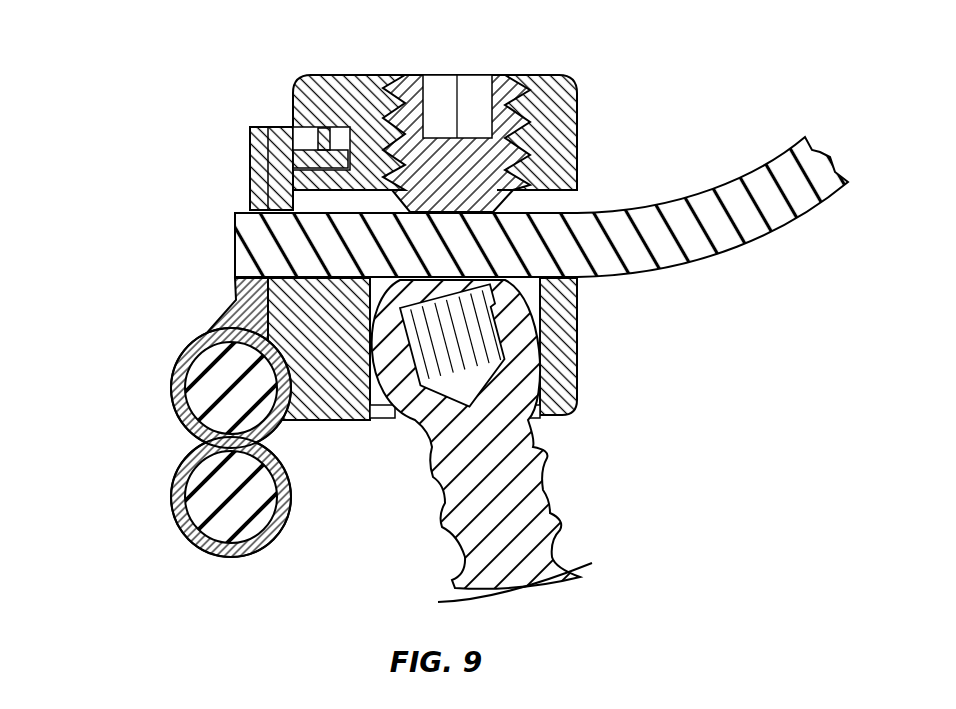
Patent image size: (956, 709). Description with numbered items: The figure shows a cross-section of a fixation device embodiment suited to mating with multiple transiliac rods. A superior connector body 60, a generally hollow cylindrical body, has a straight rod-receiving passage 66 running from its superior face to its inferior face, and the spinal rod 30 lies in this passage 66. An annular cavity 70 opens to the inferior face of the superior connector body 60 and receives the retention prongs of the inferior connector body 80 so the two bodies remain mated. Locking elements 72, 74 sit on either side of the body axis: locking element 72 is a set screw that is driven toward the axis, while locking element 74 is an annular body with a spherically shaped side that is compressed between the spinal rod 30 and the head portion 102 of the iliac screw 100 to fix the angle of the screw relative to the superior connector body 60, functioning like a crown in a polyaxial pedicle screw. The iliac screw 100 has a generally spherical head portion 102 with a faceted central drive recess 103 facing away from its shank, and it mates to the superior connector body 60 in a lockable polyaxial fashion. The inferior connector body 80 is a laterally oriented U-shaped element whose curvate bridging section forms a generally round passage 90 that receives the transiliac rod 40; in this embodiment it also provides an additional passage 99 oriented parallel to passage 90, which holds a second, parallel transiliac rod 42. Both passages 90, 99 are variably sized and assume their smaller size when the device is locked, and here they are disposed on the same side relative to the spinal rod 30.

The spinal rod 30 is at (718, 233).
The transiliac rod 40 is at (220, 387).
The lower wire 42 is at (215, 500).
The superior connector body 60 is at (605, 110).
The rod-receiving passage 66 is at (540, 203).
The annular cavity 70 is at (320, 118).
The locking element 72 is at (392, 88).
The locking element 74 is at (523, 310).
The inferior connector body 80 is at (128, 325).
The passage 90 is at (172, 386).
The additional passage 99 is at (172, 498).
The iliac screw 100 is at (528, 470).
The head portion 102 is at (528, 357).
The faceted central drive recess 103 is at (470, 350).